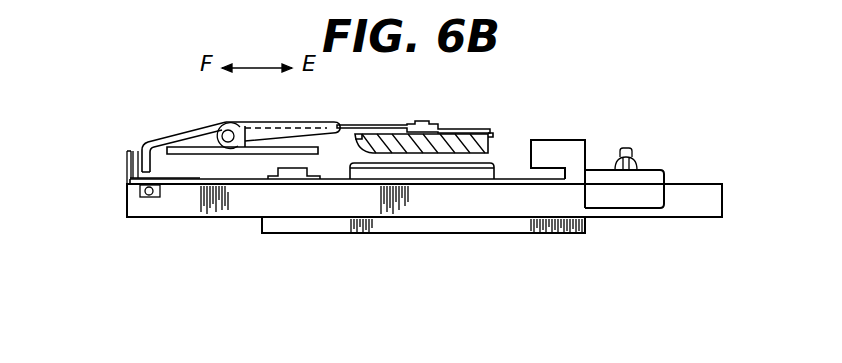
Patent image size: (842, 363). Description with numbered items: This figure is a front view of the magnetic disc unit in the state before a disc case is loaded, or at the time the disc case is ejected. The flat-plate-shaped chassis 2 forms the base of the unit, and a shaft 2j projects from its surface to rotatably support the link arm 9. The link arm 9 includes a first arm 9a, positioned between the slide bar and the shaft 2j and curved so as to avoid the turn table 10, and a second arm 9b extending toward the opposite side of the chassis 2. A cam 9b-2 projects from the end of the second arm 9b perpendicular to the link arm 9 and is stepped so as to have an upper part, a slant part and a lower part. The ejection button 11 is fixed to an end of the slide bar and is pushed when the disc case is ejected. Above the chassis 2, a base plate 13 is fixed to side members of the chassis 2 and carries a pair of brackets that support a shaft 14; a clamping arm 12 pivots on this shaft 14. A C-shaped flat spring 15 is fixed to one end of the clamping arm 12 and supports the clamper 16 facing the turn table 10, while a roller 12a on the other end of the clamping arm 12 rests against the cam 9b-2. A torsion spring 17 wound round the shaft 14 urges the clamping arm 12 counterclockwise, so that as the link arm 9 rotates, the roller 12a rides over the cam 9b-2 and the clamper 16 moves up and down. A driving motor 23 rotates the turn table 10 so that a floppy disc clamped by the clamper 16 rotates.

The chassis 2 is at (237, 207).
The shaft 2j is at (290, 170).
The link arm 9 is at (340, 175).
The first arm 9a is at (513, 178).
The second arm 9b is at (192, 182).
The cam 9b-2 is at (128, 173).
The turn table 10 is at (481, 178).
The ejection button 11 is at (623, 200).
The clamping arm 12 is at (207, 122).
The roller 12a is at (117, 150).
The base plate 13 is at (170, 140).
The shaft 14 is at (227, 128).
The C-shaped flat spring 15 is at (405, 122).
The clamper 16 is at (470, 127).
The torsion spring 17 is at (252, 117).
The driving motor 23 is at (417, 220).